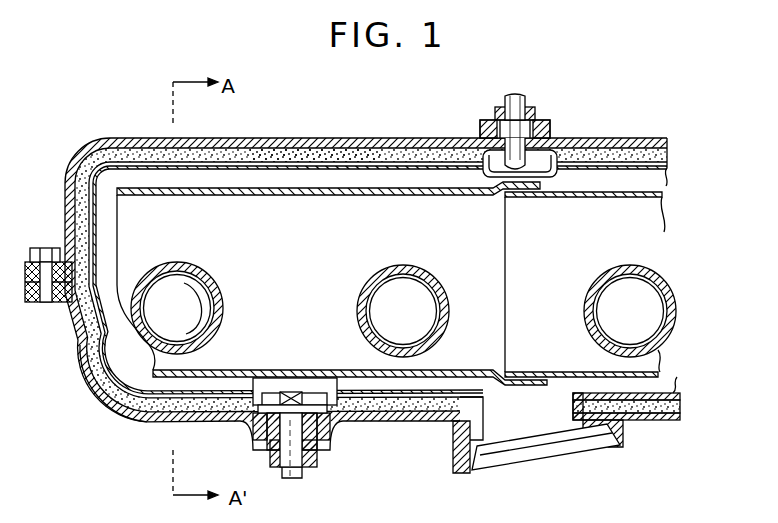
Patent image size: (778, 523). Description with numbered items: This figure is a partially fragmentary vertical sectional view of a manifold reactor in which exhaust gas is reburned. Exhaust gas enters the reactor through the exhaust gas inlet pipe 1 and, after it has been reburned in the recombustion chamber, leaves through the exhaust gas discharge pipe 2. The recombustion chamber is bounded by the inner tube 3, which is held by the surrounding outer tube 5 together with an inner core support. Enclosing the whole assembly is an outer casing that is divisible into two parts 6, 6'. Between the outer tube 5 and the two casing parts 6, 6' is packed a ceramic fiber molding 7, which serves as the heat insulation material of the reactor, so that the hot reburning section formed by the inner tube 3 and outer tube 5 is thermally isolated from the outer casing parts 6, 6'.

The exhaust gas inlet pipe 1 is at (657, 278).
The exhaust gas discharge pipe 2 is at (525, 445).
The inner tube 3 is at (592, 193).
The outer tube 5 is at (388, 162).
The outer casing part 6 is at (346, 278).
The outer casing part 6' is at (113, 390).
The ceramic fiber molding 7 is at (310, 157).